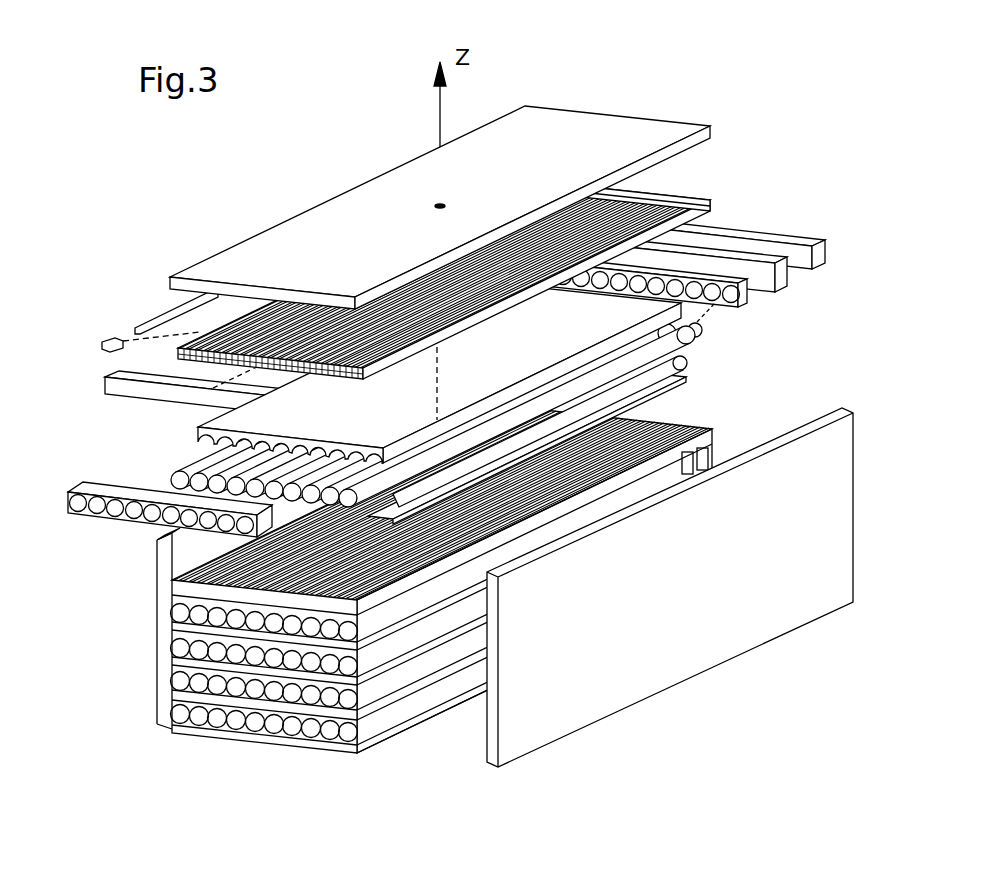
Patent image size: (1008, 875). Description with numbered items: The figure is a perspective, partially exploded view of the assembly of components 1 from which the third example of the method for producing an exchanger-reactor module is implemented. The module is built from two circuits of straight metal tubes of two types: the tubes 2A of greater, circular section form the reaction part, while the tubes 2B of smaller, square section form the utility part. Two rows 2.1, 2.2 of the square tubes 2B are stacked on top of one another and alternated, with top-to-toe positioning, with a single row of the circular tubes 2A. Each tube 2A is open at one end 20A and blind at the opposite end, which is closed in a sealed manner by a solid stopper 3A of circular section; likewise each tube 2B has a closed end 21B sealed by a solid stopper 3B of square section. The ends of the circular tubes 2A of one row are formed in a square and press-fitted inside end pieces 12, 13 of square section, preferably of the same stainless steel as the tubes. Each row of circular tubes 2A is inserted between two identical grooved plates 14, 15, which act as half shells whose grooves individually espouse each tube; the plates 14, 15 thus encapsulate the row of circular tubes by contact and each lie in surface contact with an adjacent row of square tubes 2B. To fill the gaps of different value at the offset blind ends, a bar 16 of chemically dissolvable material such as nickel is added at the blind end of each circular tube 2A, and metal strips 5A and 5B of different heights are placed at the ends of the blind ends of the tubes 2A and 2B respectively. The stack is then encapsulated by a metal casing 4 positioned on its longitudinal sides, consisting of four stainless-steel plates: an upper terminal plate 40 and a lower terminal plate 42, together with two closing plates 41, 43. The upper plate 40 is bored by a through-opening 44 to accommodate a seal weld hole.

The detector module assembly 1 is at (776, 84).
The metal casing 4 is at (612, 83).
The upper terminal plate 40 is at (377, 172).
The through-opening 44 is at (440, 205).
The tube of square section 2B is at (495, 231).
The first row of tubes of square section 2.1 is at (712, 200).
The second row of tubes of square section 2.2 is at (715, 210).
The metal strip 5A is at (797, 242).
The bar 16 is at (787, 272).
The end piece 13 is at (747, 288).
The solid stopper of circular section 3A is at (700, 337).
The tube of circular section 2A is at (647, 373).
The grooved plate 14 is at (636, 397).
The grooved plate 15 is at (281, 388).
The closed end of tube of square section 21B is at (136, 330).
The solid stopper of square section 3B is at (103, 338).
The metal strip 5B is at (105, 387).
The open end of tube of circular section 20A is at (187, 468).
The end piece 12 is at (118, 512).
The closing plate 43 is at (156, 600).
The lower terminal plate 42 is at (290, 745).
The closing plate 41 is at (667, 655).